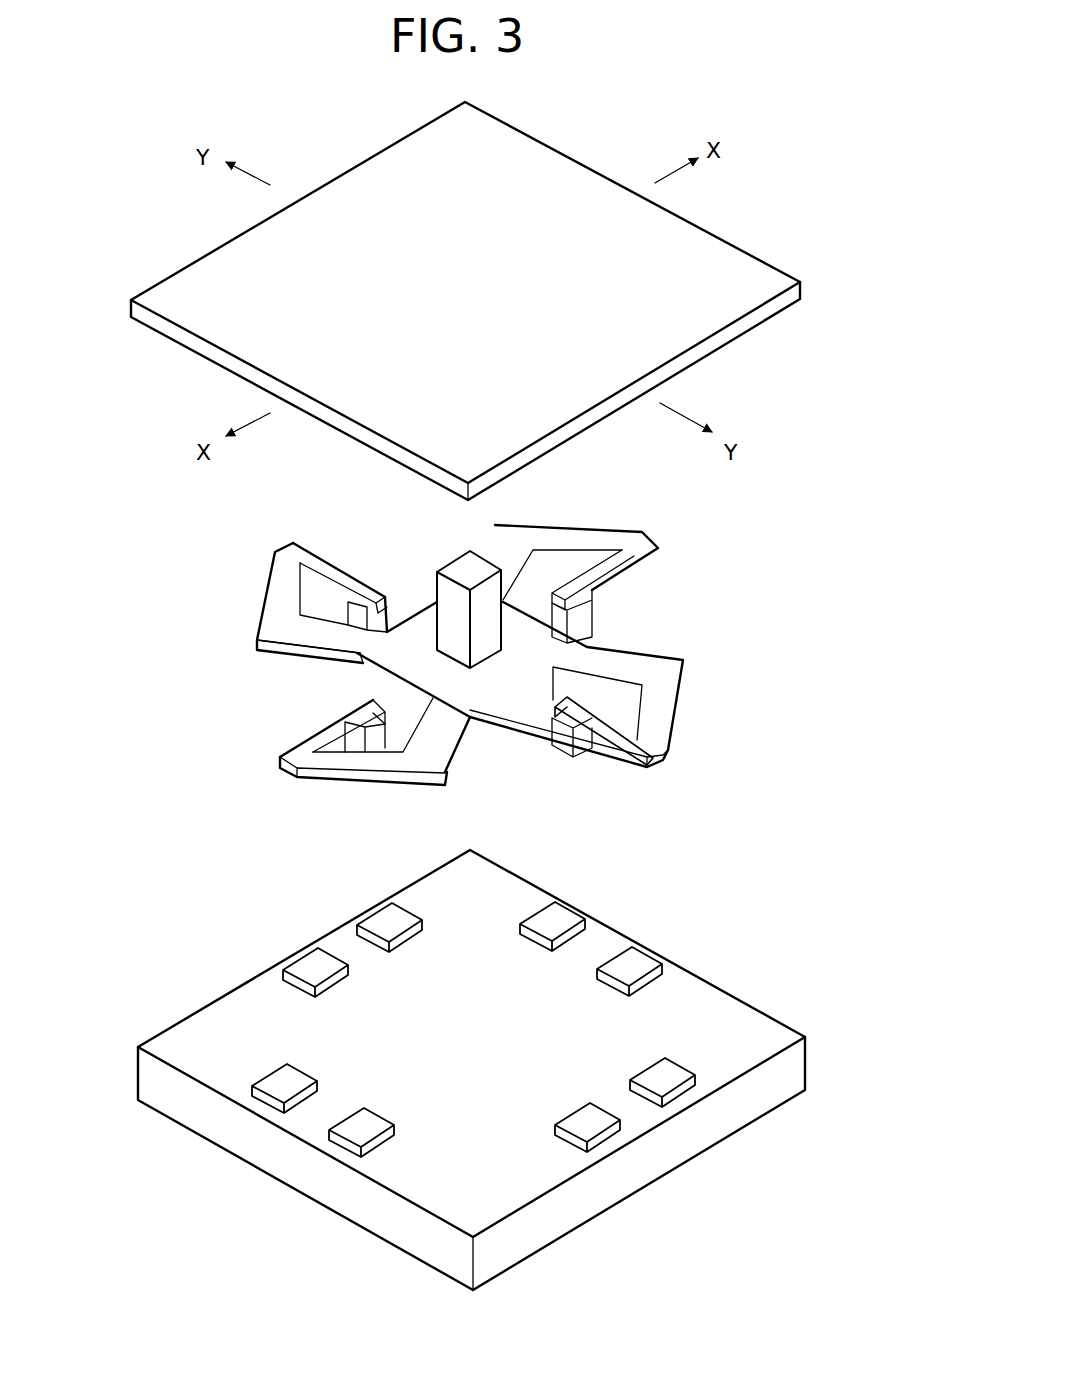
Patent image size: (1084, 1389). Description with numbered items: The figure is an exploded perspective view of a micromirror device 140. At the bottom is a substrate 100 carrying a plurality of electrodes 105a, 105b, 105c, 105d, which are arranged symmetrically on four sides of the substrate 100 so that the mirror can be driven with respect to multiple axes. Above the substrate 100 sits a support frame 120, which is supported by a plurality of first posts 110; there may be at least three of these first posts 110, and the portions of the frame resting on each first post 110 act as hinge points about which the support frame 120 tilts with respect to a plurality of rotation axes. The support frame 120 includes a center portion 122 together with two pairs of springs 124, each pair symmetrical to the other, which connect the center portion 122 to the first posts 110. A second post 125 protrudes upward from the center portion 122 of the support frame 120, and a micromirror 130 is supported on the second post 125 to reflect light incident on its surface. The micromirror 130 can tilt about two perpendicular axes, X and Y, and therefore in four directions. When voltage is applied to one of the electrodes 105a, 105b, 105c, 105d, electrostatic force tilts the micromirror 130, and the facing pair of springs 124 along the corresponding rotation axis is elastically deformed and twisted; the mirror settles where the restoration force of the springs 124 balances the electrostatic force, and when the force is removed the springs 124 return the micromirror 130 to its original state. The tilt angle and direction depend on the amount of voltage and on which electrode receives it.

The substrate 100 is at (753, 1028).
The electrode 105a is at (350, 1127).
The electrode 105b is at (673, 1080).
The electrode 105c is at (563, 917).
The electrode 105d is at (378, 920).
The first post 110 is at (583, 620).
The support frame 120 is at (516, 626).
The center portion 122 is at (393, 663).
The spring 124 is at (365, 585).
The second post 125 is at (477, 570).
The micromirror 130 is at (725, 270).
The micromirror device 140 is at (832, 250).